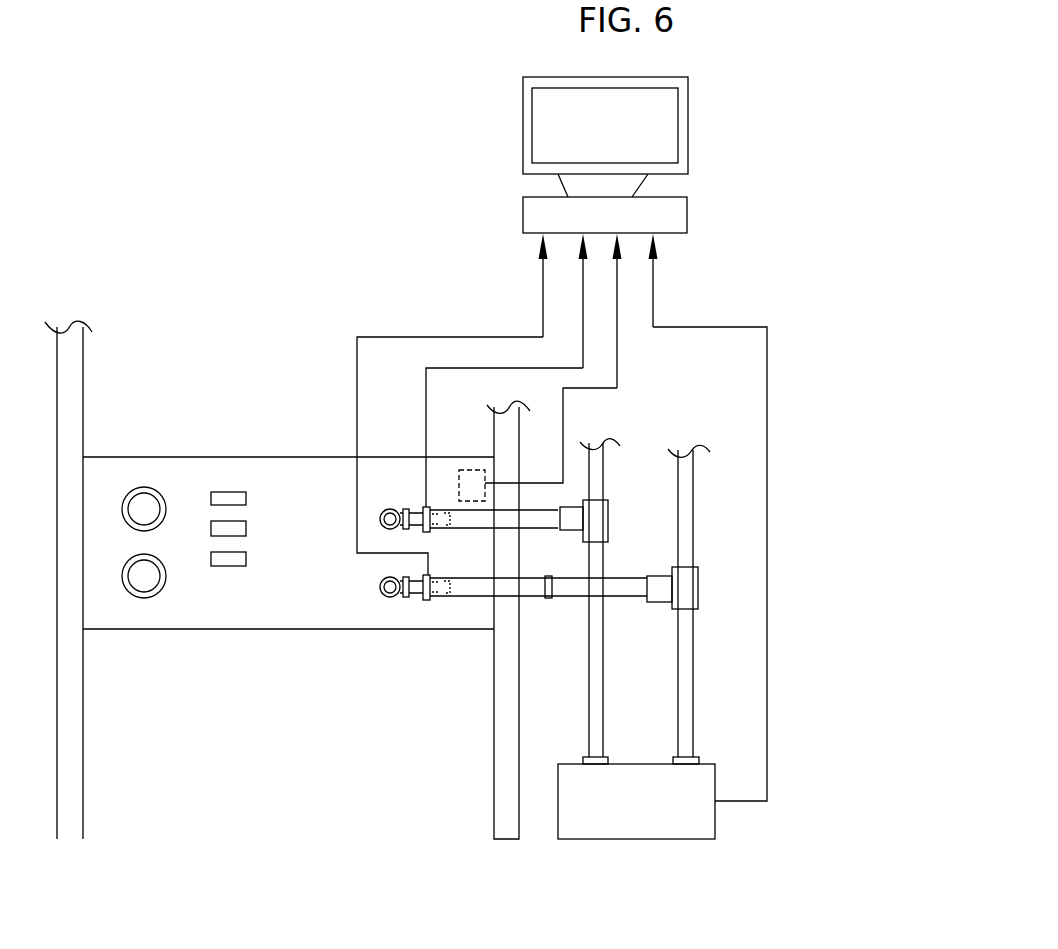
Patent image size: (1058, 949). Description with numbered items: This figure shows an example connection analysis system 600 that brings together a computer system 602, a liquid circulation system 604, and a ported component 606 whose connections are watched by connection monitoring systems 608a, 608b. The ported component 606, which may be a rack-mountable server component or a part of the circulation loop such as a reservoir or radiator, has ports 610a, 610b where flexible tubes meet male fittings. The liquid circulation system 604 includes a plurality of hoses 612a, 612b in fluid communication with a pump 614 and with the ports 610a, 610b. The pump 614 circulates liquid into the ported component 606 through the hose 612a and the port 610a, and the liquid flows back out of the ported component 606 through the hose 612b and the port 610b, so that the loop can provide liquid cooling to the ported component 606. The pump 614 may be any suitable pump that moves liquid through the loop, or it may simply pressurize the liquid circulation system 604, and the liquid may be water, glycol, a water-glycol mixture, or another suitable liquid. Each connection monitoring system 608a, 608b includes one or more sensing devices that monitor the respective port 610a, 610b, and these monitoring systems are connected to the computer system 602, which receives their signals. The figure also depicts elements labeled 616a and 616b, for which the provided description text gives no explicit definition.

The connection analysis system 600 is at (455, 205).
The computer system 602 is at (667, 215).
The liquid circulation system 604 is at (684, 639).
The ported component 606 is at (205, 475).
The connection monitoring system 608a is at (430, 474).
The connection monitoring system 608b is at (477, 623).
The port 610a is at (380, 516).
The port 610b is at (383, 589).
The hose 612a is at (690, 677).
The hose 612b is at (598, 692).
The pump 614 is at (656, 810).
The main conduit / sensor 616a is at (546, 602).
The sensor nut / fitting 616b is at (405, 530).